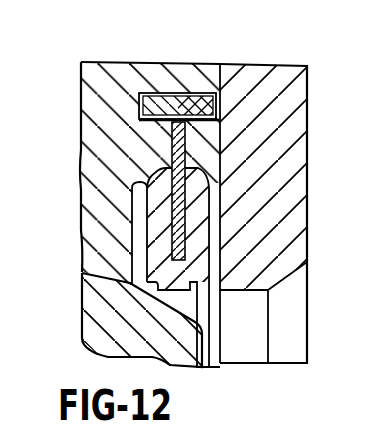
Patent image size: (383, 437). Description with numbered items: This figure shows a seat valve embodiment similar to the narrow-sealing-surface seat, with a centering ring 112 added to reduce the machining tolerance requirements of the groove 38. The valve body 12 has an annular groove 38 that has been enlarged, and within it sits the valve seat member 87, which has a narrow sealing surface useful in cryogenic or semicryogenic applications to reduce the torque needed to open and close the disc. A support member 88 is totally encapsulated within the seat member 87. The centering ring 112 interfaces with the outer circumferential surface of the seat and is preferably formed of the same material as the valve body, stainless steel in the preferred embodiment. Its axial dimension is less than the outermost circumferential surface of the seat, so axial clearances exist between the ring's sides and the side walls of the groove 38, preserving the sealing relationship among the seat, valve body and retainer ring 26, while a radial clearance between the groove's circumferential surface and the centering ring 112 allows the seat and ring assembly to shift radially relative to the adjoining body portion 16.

The body 12 is at (101, 72).
The lower block 16 is at (100, 310).
The body member 26 is at (284, 70).
The groove 38 is at (172, 66).
The valve seat member 87 is at (136, 220).
The support member 88 is at (158, 172).
The centering ring 112 is at (220, 66).